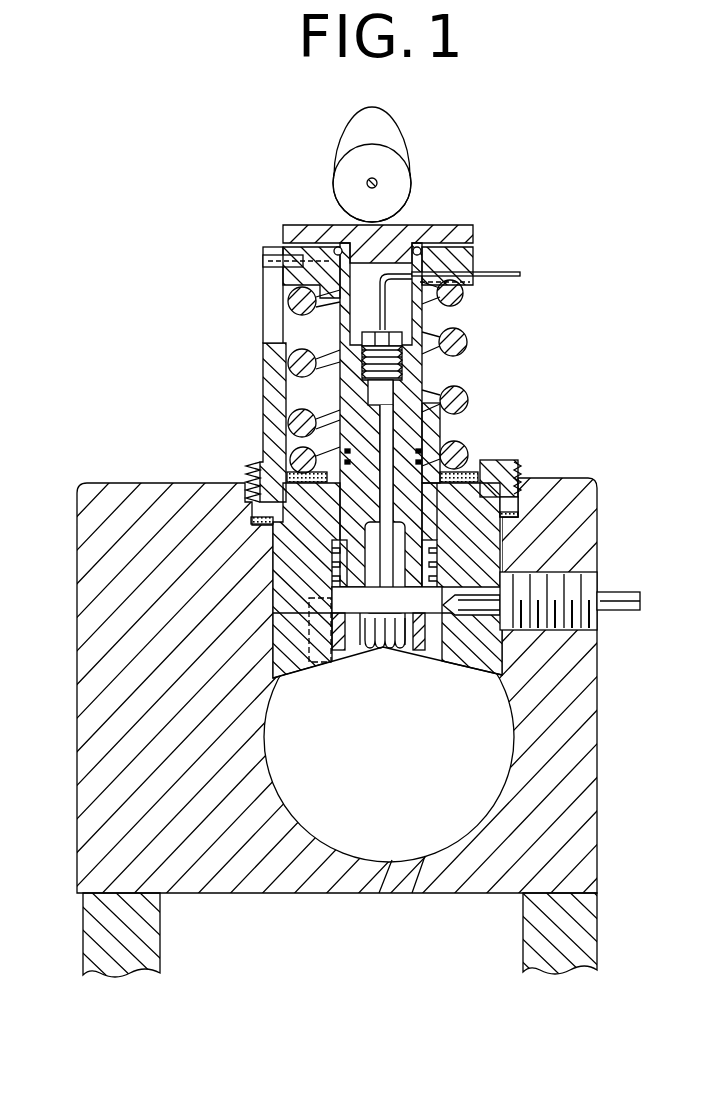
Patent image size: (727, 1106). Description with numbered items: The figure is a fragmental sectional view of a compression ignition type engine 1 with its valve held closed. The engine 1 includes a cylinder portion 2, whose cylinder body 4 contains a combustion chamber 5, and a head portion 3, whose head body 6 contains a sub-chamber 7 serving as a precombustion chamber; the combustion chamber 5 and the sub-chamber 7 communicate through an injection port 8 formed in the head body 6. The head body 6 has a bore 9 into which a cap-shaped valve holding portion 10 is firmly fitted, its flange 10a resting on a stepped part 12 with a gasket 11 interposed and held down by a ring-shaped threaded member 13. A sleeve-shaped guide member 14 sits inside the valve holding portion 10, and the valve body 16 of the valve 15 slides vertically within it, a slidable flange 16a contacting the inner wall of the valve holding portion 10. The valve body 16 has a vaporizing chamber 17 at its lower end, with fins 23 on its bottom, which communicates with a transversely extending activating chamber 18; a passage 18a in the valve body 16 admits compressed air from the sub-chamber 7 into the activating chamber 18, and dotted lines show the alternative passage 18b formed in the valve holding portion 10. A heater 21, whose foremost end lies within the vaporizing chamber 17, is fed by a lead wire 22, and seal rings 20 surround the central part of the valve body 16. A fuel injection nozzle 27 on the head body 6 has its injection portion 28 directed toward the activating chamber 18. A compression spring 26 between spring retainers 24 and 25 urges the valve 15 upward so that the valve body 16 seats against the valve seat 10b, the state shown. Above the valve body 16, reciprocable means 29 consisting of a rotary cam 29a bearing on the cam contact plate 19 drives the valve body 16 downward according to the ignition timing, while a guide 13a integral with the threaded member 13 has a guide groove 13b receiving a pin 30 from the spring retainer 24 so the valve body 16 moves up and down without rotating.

The compression ignition type engine 1 is at (528, 387).
The cylinder portion 2 is at (574, 953).
The head portion 3 is at (545, 462).
The cylinder body 4 is at (92, 934).
The combustion chamber 5 is at (291, 971).
The head body 6 is at (122, 493).
The sub-chamber 7 is at (377, 803).
The injection port 8 is at (396, 884).
The bore 9 is at (287, 672).
The valve holding portion 10 is at (502, 500).
The flange 10a is at (545, 480).
The valve seat 10b is at (443, 658).
The gasket 11 is at (517, 527).
The stepped part 12 is at (260, 513).
The threaded member 13 is at (260, 462).
The guide 13a is at (260, 368).
The guide groove 13b is at (268, 287).
The guide member 14 is at (438, 427).
The valve 15 is at (428, 377).
The valve body 16 is at (347, 387).
The slidable flange 16a is at (437, 566).
The vaporizing chamber 17 is at (360, 650).
The activating chamber 18 is at (358, 614).
The passage 18a is at (437, 657).
The passage 18b is at (306, 665).
The cam contact plate 19 is at (395, 245).
The seal rings 20 is at (347, 460).
The heater 21 is at (408, 612).
The lead wire 22 is at (493, 273).
The fins 23 is at (386, 612).
The spring retainer 24 is at (315, 252).
The spring retainer 25 is at (467, 452).
The compression spring 26 is at (300, 350).
The fuel injection nozzle 27 is at (600, 572).
The injection portion 28 is at (505, 643).
The reciprocable means 29 is at (340, 220).
The rotary cam 29a is at (408, 158).
The pin 30 is at (273, 250).